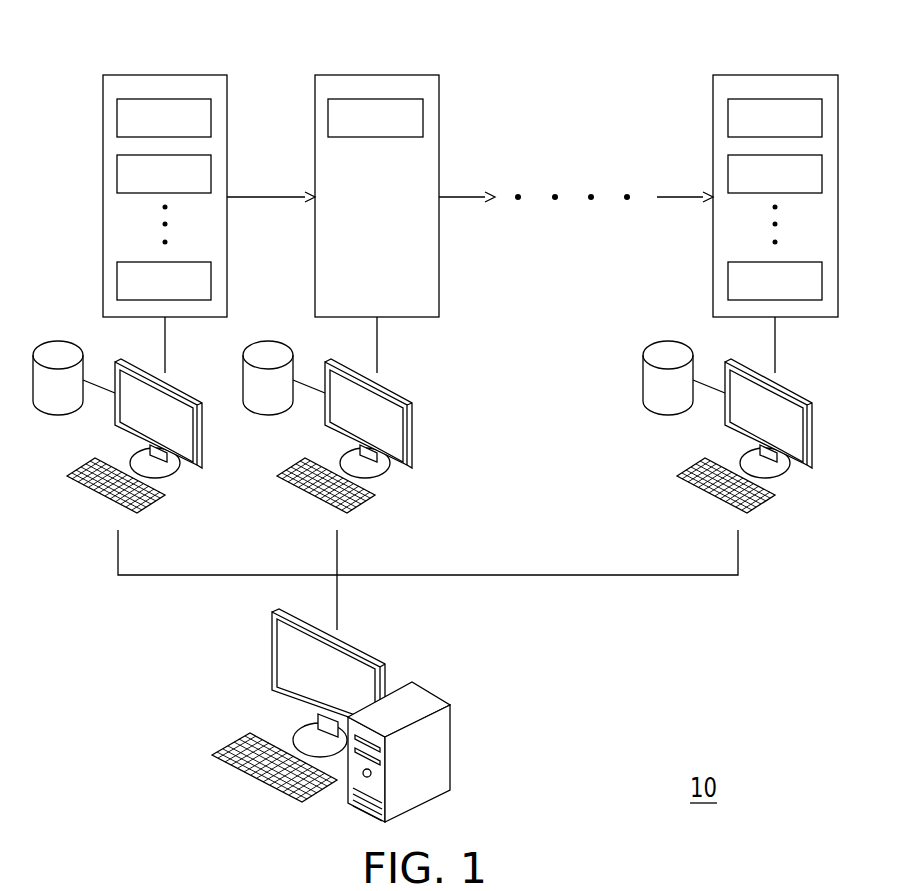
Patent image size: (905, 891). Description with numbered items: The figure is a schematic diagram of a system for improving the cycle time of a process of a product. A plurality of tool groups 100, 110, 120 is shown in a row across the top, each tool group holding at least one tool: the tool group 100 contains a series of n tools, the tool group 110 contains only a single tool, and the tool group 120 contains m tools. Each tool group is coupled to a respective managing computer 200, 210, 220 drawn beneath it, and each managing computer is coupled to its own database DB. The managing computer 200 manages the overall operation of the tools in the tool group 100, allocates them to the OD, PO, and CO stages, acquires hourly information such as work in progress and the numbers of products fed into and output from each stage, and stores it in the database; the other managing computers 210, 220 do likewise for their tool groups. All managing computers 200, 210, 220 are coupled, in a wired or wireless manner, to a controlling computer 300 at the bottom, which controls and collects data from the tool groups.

The tool group 100 is at (165, 74).
The tool group 110 is at (377, 74).
The tool group 120 is at (775, 74).
The managing computer 200 is at (187, 395).
The managing computer 210 is at (336, 427).
The managing computer 220 is at (736, 427).
The controlling computer 300 is at (450, 749).